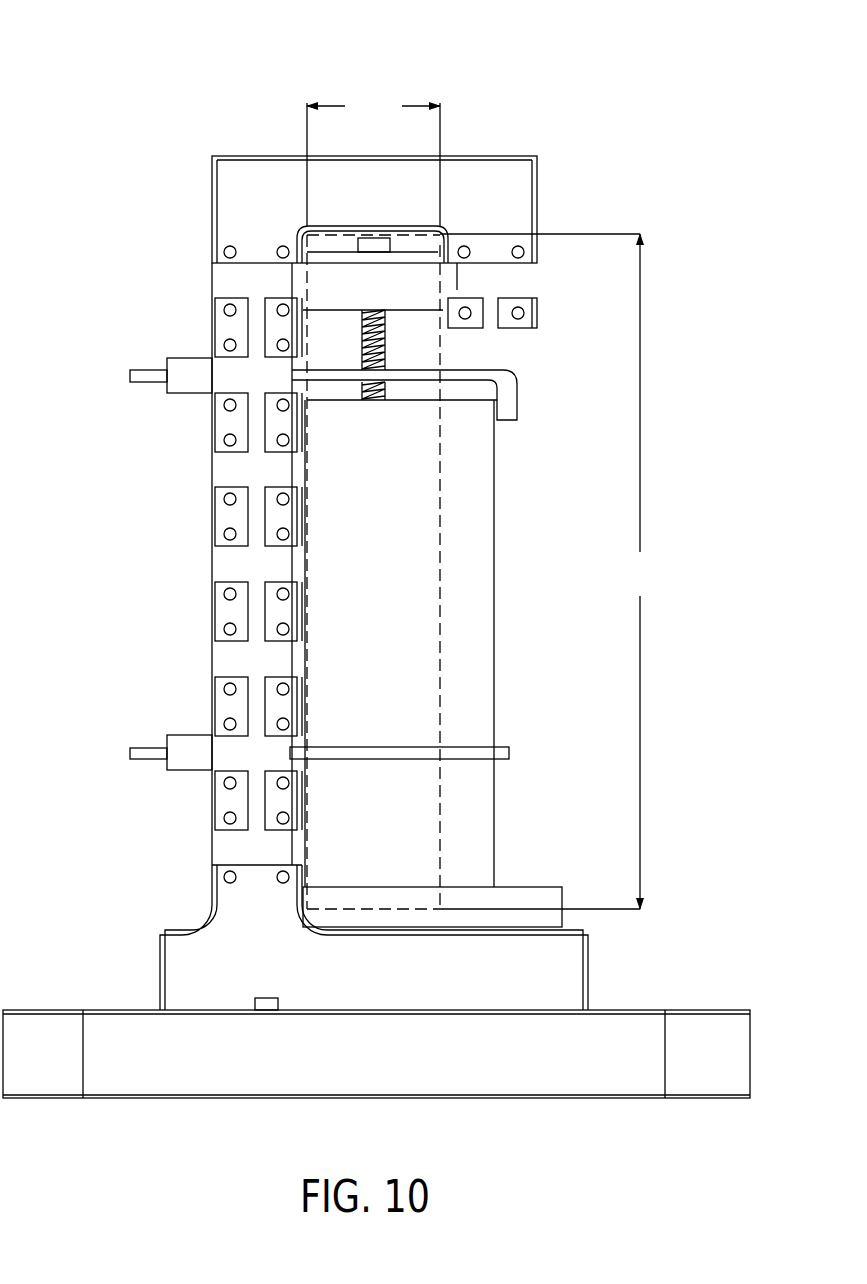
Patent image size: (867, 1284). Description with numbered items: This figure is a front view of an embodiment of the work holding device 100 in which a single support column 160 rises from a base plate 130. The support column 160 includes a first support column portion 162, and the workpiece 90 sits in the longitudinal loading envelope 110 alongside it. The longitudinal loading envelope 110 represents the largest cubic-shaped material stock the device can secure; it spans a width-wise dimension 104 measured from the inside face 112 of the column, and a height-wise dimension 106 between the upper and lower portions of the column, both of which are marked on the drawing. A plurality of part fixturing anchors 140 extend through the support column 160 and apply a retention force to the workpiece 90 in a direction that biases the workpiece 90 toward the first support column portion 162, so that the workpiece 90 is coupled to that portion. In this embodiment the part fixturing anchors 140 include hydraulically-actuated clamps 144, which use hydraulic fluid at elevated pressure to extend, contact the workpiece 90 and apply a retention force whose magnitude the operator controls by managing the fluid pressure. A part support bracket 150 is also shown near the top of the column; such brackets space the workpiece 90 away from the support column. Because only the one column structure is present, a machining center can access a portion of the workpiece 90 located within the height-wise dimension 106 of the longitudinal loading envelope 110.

The work holding device 100 is at (583, 100).
The support column 160 is at (206, 193).
The width-wise dimension 104 is at (373, 158).
The height-wise dimension 106 is at (551, 571).
The longitudinal loading envelope 110 is at (446, 244).
The inside face 112 is at (305, 333).
The part support bracket 150 is at (455, 290).
The first support column portion 162 is at (537, 312).
The part fixturing anchors 140 is at (389, 362).
The hydraulically-actuated clamps 144 is at (145, 368).
The workpiece 90 is at (495, 617).
The base plate 130 is at (719, 1007).